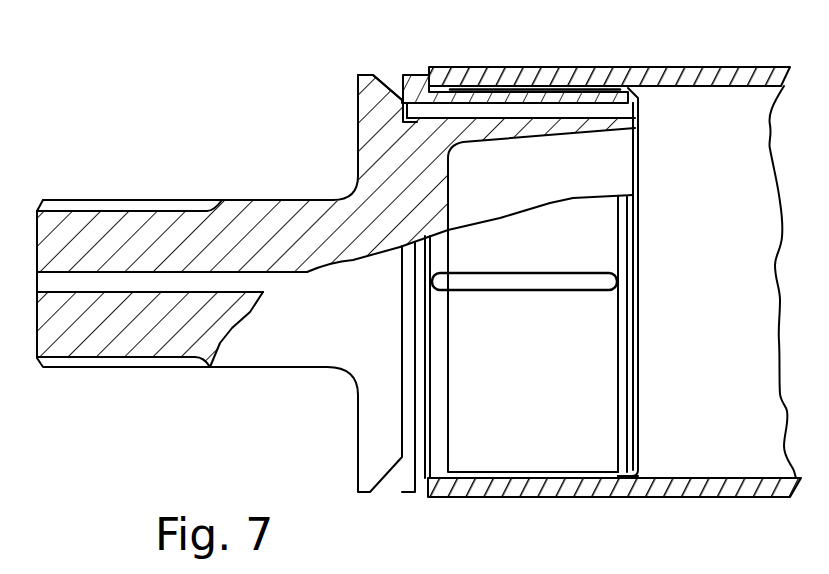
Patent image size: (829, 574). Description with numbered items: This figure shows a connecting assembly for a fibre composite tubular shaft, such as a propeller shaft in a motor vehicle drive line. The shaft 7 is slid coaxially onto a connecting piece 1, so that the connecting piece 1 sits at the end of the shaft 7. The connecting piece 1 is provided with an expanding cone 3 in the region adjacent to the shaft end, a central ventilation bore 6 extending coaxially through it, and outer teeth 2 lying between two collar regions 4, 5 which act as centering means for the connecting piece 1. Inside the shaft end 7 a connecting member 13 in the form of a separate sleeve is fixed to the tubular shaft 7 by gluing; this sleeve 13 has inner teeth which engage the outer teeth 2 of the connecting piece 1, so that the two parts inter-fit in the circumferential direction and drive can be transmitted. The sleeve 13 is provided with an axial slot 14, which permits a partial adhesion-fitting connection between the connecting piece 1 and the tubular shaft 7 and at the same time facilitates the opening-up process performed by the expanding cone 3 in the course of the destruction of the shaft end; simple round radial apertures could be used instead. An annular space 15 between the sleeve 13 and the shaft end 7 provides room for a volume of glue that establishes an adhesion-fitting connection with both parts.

The connecting piece 1 is at (390, 170).
The outer teeth 2 is at (582, 107).
The expanding cone 3 is at (395, 103).
The collar region 4 is at (437, 470).
The collar region 5 is at (620, 473).
The ventilation bore 6 is at (93, 278).
The shaft 7 is at (493, 68).
The connecting member 13 is at (545, 92).
The axial slot 14 is at (528, 287).
The annular space 15 is at (572, 475).